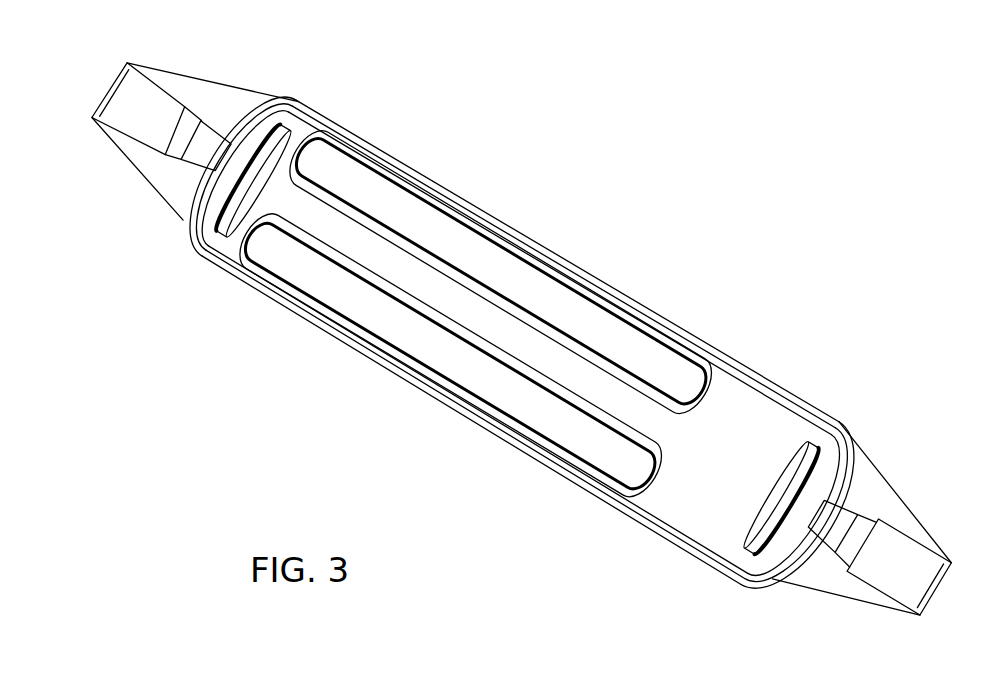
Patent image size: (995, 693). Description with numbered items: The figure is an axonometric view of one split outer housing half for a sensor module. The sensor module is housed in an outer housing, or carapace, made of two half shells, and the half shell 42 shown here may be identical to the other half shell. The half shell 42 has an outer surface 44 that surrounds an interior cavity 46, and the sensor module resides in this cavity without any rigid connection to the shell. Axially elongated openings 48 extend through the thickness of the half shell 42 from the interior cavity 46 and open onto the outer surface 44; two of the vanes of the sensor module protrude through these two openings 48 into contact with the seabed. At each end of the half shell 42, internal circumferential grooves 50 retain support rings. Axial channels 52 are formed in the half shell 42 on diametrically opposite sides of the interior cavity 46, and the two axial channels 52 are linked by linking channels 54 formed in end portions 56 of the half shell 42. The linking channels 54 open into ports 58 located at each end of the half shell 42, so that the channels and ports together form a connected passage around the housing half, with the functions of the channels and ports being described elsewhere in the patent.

The half shell 42 is at (622, 232).
The outer surface 44 is at (565, 264).
The interior cavity 46 is at (519, 342).
The axially elongated openings 48 is at (476, 313).
The internal circumferential grooves 50 is at (517, 339).
The axial channels 52 is at (473, 417).
The linking channels 54 is at (522, 342).
The end portions 56 is at (526, 332).
The ports 58 is at (123, 100).